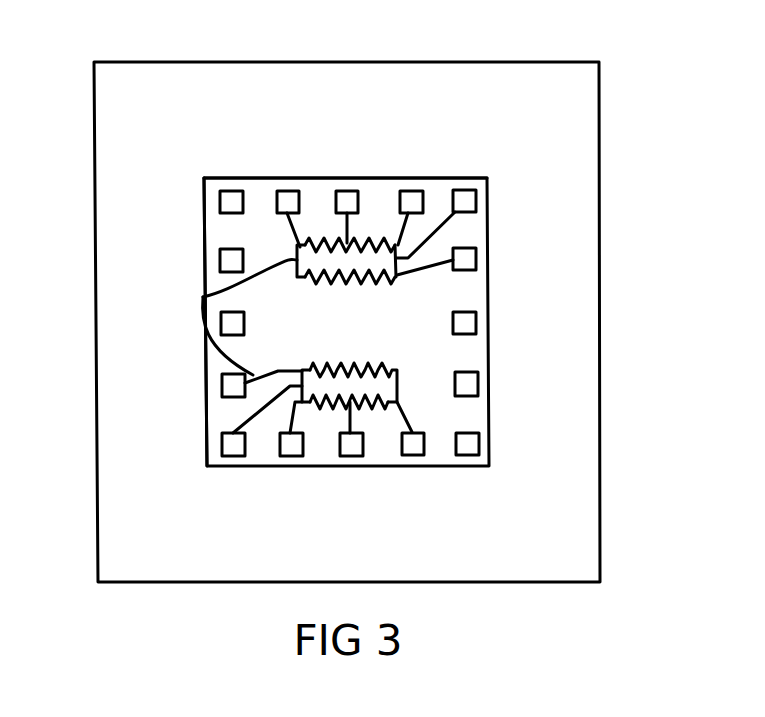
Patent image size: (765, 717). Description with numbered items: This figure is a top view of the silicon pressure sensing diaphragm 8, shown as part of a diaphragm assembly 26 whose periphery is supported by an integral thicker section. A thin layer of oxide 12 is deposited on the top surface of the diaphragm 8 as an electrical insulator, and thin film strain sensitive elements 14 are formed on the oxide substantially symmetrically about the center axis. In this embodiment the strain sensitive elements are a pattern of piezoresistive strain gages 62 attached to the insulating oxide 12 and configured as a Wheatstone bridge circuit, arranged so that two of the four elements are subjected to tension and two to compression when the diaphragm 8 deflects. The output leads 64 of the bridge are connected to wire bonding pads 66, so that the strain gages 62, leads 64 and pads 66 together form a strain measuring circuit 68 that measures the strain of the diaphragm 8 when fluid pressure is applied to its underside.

The diaphragm 8 is at (468, 178).
The oxide 12 is at (487, 230).
The strain sensitive elements 14 is at (188, 228).
The diaphragm assembly 26 is at (603, 120).
The piezoresistive strain gages 62 is at (373, 278).
The output leads 64 is at (203, 297).
The wire bonding pads 66 is at (477, 322).
The strain measuring circuit 68 is at (370, 334).